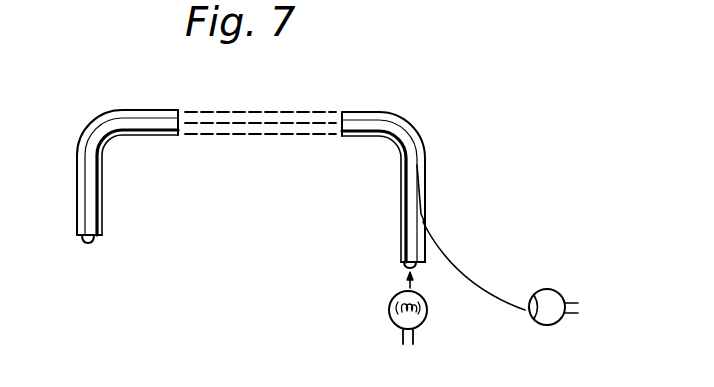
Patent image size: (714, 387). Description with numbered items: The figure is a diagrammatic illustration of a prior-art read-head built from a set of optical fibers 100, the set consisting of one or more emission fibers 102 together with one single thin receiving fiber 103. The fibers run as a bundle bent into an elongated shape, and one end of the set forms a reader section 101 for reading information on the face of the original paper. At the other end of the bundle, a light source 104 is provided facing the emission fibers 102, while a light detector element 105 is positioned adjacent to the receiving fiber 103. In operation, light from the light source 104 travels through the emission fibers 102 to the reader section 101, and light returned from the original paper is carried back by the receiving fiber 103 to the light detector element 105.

The fiber optic light guide tube 100 is at (160, 110).
The reader section 101 is at (72, 208).
The emission fibers 102 is at (401, 247).
The receiving fiber 103 is at (465, 273).
The light source 104 is at (428, 310).
The light detector element 105 is at (545, 289).